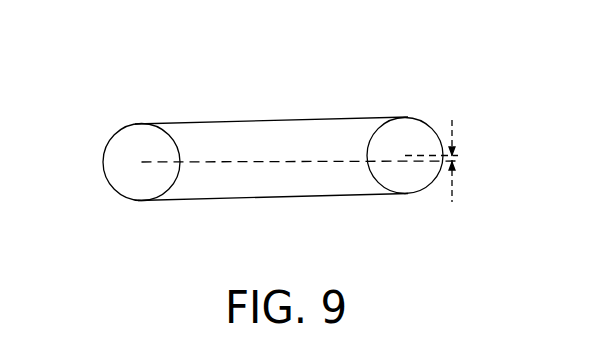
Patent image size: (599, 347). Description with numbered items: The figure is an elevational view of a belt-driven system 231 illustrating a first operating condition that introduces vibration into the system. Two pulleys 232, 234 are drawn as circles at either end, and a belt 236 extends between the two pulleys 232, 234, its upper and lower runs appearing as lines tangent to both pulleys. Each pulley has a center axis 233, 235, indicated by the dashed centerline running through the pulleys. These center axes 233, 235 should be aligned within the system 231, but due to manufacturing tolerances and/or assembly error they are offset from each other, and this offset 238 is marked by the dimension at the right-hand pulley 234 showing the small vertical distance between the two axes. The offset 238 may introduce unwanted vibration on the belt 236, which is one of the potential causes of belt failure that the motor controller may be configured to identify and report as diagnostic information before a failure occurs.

The belt-driven system 231 is at (213, 121).
The pulley 232 is at (127, 150).
The center axis 233 is at (141, 164).
The pulley 234 is at (418, 137).
The center axis 235 is at (405, 155).
The belt 236 is at (285, 119).
The offset 238 is at (470, 160).